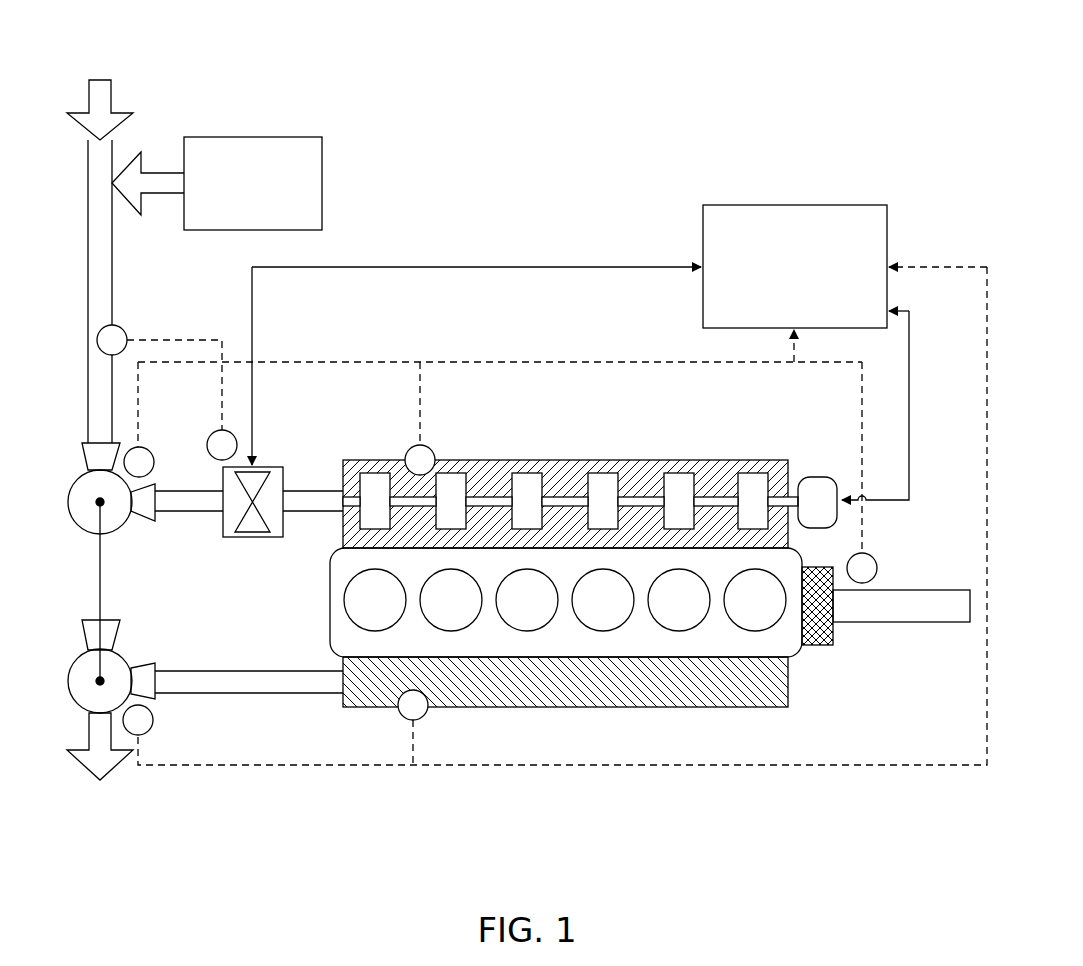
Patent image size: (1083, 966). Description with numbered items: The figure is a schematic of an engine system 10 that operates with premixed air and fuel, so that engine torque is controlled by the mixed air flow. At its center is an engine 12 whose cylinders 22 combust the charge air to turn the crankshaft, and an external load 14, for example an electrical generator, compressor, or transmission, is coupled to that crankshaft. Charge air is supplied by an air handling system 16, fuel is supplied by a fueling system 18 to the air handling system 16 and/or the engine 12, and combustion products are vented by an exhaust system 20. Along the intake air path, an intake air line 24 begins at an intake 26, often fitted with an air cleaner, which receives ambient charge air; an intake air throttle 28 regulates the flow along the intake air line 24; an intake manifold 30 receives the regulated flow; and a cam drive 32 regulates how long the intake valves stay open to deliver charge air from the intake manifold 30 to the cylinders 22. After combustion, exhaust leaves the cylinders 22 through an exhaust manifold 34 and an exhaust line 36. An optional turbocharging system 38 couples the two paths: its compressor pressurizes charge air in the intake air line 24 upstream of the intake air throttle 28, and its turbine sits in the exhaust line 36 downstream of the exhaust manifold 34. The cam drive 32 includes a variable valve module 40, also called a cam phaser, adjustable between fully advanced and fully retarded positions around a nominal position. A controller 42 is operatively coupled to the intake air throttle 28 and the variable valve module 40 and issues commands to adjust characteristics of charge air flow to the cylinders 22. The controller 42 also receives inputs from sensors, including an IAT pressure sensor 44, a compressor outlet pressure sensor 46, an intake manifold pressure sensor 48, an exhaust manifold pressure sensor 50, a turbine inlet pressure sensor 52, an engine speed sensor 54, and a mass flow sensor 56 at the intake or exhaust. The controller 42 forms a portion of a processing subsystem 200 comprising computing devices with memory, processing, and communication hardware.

The engine system 10 is at (336, 80).
The engine 12 is at (805, 652).
The external load 14 is at (905, 622).
The air handling system 16 is at (505, 230).
The fueling system 18 is at (322, 193).
The exhaust system 20 is at (119, 826).
The cylinders 22 is at (675, 636).
The intake air line 24 is at (112, 308).
The intake 26 is at (112, 100).
The intake air throttle 28 is at (247, 538).
The intake manifold 30 is at (668, 460).
The cam drive 32 is at (772, 460).
The exhaust manifold 34 is at (705, 708).
The exhaust line 36 is at (238, 670).
The turbocharging system 38 is at (146, 646).
The variable valve module 40 is at (823, 477).
The controller 42 is at (887, 226).
The IAT pressure sensor 44 is at (209, 440).
The compressor outlet pressure sensor 46 is at (143, 447).
The intake manifold pressure sensor 48 is at (435, 452).
The exhaust manifold pressure sensor 50 is at (425, 718).
The turbine inlet pressure sensor 52 is at (140, 736).
The engine speed sensor 54 is at (878, 568).
The mass flow sensor 56 is at (126, 333).
The processing subsystem 200 is at (827, 158).